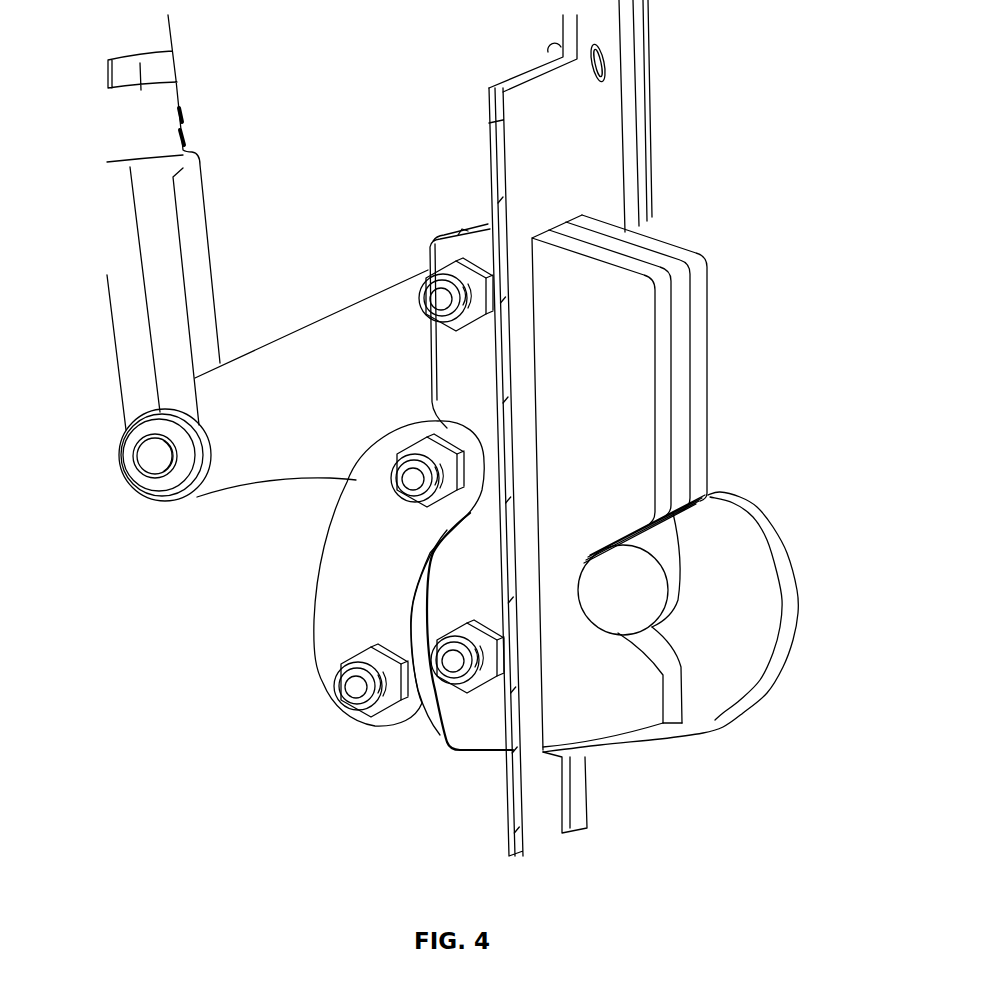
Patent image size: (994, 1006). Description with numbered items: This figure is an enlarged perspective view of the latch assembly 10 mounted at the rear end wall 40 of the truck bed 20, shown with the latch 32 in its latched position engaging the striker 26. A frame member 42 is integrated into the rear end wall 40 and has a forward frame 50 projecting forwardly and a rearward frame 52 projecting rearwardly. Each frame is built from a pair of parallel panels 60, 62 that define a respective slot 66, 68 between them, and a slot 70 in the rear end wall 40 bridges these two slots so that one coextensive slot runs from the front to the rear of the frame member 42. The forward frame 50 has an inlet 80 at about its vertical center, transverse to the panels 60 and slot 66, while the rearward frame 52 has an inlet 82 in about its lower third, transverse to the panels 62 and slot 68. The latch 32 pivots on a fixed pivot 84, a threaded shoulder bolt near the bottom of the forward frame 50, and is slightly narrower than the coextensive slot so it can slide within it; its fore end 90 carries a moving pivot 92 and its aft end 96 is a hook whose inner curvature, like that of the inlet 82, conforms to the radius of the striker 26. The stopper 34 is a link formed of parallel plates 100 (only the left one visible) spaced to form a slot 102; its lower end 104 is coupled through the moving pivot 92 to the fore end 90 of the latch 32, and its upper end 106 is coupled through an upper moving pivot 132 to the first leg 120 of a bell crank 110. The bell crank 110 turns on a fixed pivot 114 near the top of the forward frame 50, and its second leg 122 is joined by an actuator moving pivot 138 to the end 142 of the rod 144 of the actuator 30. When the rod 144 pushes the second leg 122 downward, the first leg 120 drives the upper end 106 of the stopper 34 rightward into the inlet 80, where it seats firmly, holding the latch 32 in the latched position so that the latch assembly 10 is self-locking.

The latch assembly 10 is at (315, 141).
The truck bed 20 is at (602, 182).
The striker 26 is at (637, 583).
The actuator 30 is at (200, 192).
The latch 32 is at (720, 712).
The stopper 34 is at (327, 573).
The rear end wall 40 is at (610, 133).
The frame member 42 is at (705, 310).
The forward frame 50 is at (477, 752).
The rearward frame 52 is at (645, 728).
The parallel panels 60 is at (482, 219).
The parallel panels 62 is at (625, 262).
The slot 66 is at (475, 222).
The slot 68 is at (680, 288).
The slot 70 is at (563, 231).
The inlet 80 is at (447, 430).
The inlet 82 is at (582, 593).
The fixed pivot 84 is at (450, 670).
The fore end 90 is at (408, 717).
The moving pivot 92 is at (352, 687).
The aft end (hook) 96 is at (732, 523).
The parallel plates 100 is at (313, 600).
The slot 102 is at (430, 577).
The lower end 104 is at (318, 663).
The upper end 106 is at (372, 468).
The bell crank 110 is at (287, 343).
The fixed pivot 114 is at (440, 303).
The first leg 120 is at (322, 475).
The second leg 122 is at (216, 490).
The upper moving pivot 132 is at (400, 482).
The actuator moving pivot 138 is at (150, 463).
The end 142 is at (207, 437).
The rod 144 is at (118, 297).